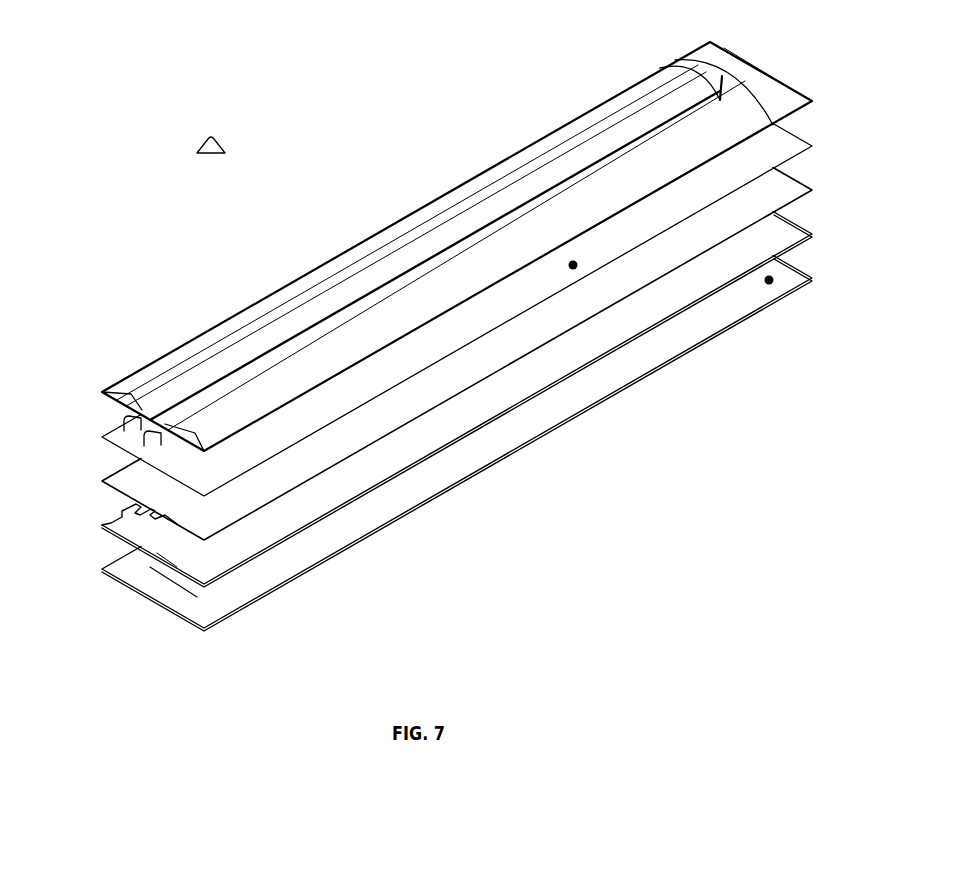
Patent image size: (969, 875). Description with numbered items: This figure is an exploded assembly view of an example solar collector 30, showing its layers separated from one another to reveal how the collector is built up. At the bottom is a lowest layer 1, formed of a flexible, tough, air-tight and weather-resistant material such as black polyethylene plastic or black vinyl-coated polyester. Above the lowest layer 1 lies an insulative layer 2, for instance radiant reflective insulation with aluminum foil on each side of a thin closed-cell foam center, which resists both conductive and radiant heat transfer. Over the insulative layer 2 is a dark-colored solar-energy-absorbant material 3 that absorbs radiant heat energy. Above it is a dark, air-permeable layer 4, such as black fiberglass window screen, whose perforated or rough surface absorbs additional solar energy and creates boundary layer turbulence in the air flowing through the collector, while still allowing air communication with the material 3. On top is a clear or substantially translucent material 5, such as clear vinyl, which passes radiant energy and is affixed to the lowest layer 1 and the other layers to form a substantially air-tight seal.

The lowest layer 1 is at (778, 262).
The insulative layer 2 is at (101, 525).
The solar-energy-absorbant material 3 is at (100, 480).
The solar-energy-absorbant air-permeable layer 4 is at (578, 268).
The clear or substantially translucent material 5 is at (409, 211).
The solar collector 30 is at (198, 142).